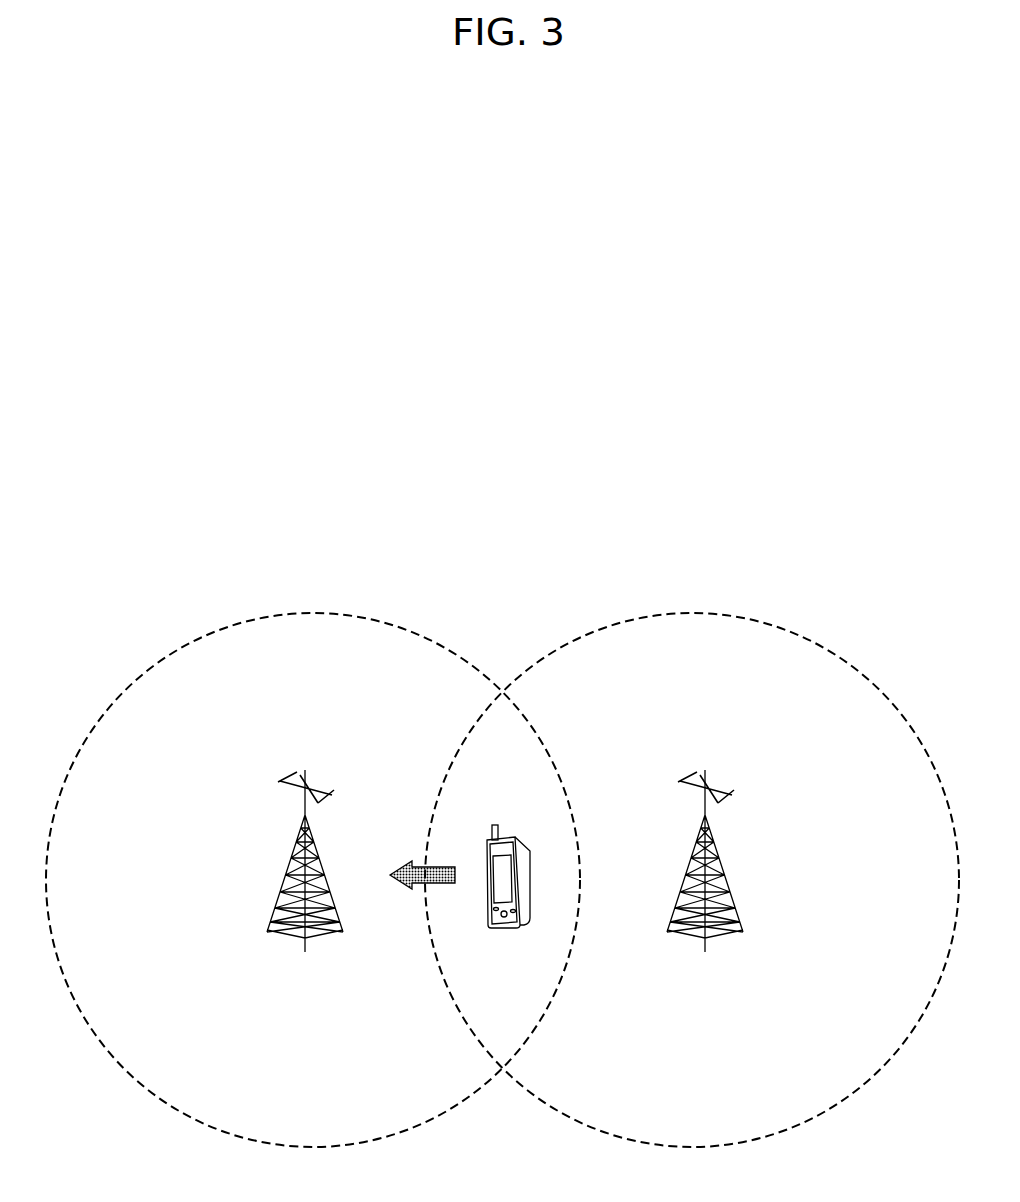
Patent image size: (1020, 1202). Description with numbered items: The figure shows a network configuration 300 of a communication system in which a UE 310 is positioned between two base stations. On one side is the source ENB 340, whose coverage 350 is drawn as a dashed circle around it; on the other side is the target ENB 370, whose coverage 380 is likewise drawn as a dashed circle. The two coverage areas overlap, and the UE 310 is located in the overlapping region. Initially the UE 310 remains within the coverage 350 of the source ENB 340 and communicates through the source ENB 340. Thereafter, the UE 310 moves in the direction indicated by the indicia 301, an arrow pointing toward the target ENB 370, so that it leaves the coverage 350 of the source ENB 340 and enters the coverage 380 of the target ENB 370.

The network environment 300 is at (527, 522).
The indicia 301 is at (409, 891).
The UE 310 is at (497, 824).
The source ENB 340 is at (710, 786).
The coverage of the source ENB 350 is at (690, 613).
The target ENB 370 is at (308, 786).
The coverage of the target ENB 380 is at (311, 613).